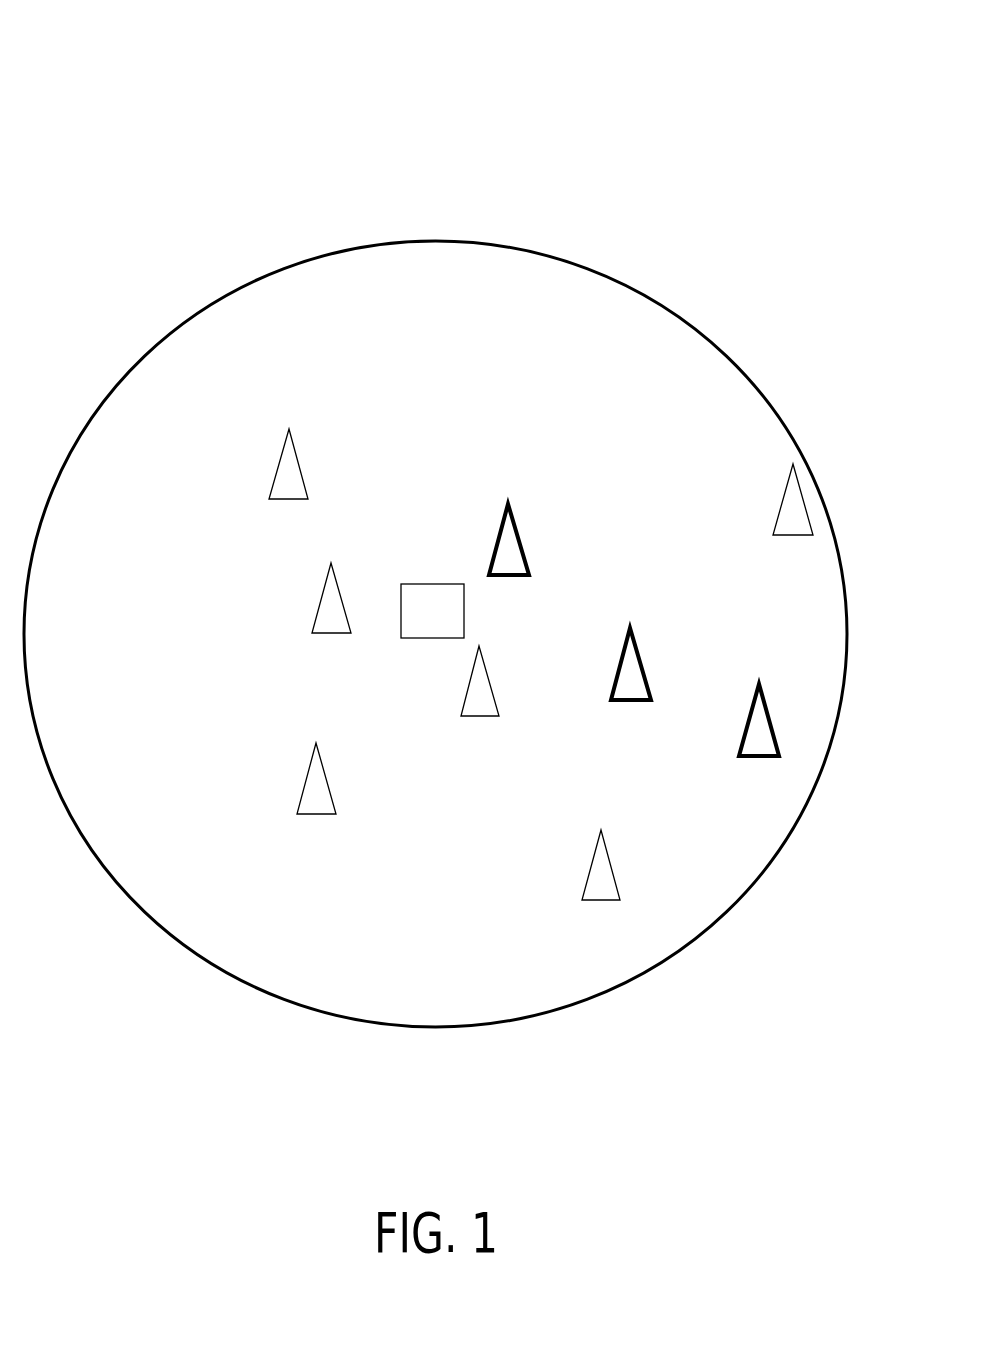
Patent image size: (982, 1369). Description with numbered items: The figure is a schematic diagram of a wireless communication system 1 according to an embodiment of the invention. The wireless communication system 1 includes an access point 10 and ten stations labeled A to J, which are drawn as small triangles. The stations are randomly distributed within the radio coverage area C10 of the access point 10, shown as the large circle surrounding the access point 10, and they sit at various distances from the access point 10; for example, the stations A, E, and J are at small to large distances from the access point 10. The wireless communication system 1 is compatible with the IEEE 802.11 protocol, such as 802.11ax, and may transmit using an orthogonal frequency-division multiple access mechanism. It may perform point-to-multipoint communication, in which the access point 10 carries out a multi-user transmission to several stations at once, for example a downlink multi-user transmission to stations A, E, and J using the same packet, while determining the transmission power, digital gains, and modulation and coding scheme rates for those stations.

The wireless communication system 1 is at (435, 513).
The radio coverage area C10 is at (685, 322).
The access point 10 is at (416, 629).